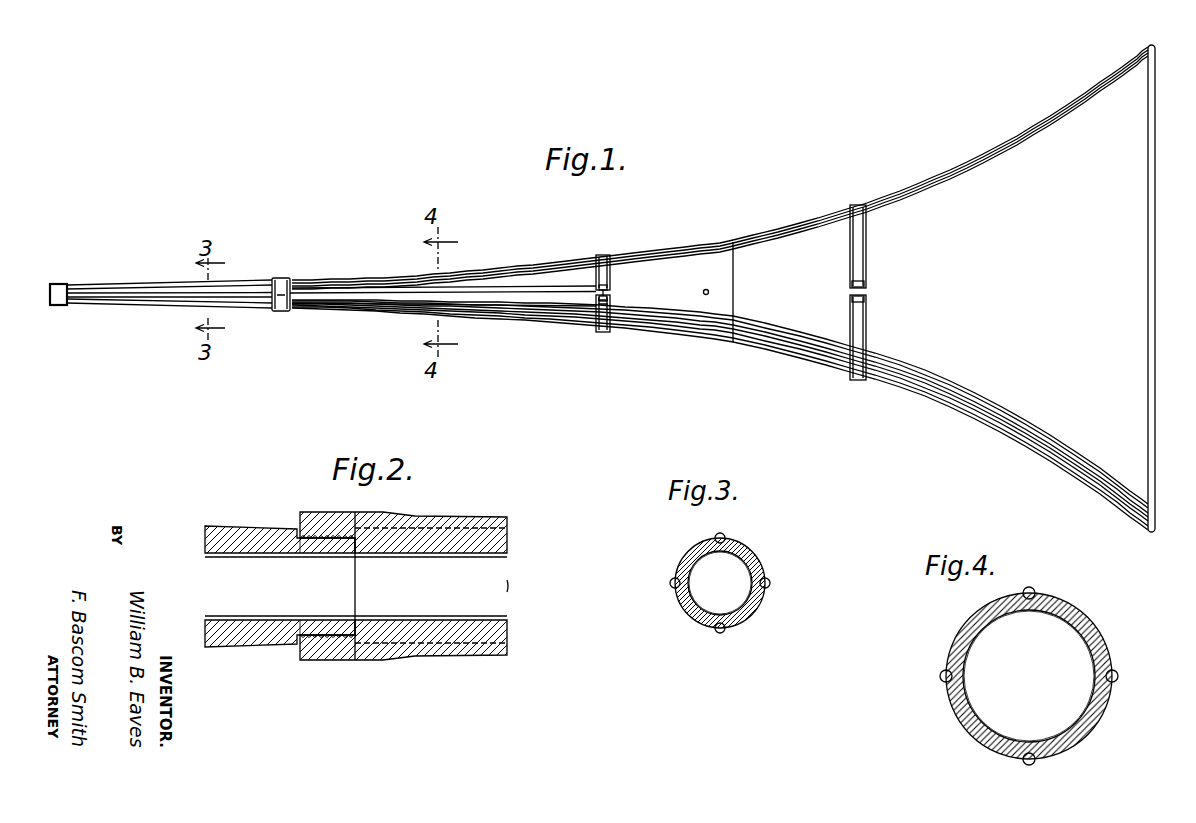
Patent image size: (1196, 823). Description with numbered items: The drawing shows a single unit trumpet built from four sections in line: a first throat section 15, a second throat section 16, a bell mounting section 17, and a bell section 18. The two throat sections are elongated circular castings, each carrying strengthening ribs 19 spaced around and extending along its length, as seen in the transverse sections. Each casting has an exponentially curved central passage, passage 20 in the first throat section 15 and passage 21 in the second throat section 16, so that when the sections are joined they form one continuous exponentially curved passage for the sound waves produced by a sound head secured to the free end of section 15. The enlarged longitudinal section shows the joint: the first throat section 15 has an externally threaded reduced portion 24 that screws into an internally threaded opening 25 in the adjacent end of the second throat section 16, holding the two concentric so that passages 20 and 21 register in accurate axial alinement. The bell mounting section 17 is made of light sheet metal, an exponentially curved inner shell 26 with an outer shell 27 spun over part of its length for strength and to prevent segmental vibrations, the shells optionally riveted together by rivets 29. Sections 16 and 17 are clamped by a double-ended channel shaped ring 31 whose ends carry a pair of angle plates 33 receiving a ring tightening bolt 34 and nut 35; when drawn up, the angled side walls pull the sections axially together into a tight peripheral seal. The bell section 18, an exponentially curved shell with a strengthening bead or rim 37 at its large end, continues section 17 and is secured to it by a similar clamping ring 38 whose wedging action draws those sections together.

In FIG. 1, the first throat section 15 is at (106, 285).
In FIG. 2, the first throat section 15 is at (200, 543).
In FIG. 3, the first throat section 15 is at (687, 616).
In FIG. 1, the second throat section 16 is at (349, 284).
In FIG. 2, the second throat section 16 is at (506, 535).
In FIG. 4, the second throat section 16 is at (962, 718).
In FIG. 1, the bell mounting section 17 is at (736, 353).
In FIG. 1, the bell section 18 is at (979, 413).
In FIG. 1, the strengthening ribs 19 is at (115, 306).
In FIG. 3, the strengthening ribs 19 is at (767, 580).
In FIG. 4, the strengthening ribs 19 is at (1114, 683).
In FIG. 2, the central passage 20 is at (210, 596).
In FIG. 3, the central passage 20 is at (745, 598).
In FIG. 2, the central passage 21 is at (503, 604).
In FIG. 4, the central passage 21 is at (1082, 645).
In FIG. 2, the externally threaded reduced portion 24 is at (326, 624).
In FIG. 2, the internally threaded opening 25 is at (325, 653).
In FIG. 1, the inner shell 26 is at (775, 248).
In FIG. 1, the outer shell 27 is at (663, 258).
In FIG. 1, the rivets 29 is at (698, 246).
In FIG. 1, the channel shaped ring 31 is at (603, 256).
In FIG. 1, the angle plates 33 is at (611, 280).
In FIG. 1, the ring tightening bolt 34 is at (594, 292).
In FIG. 1, the nut 35 is at (598, 303).
In FIG. 1, the strengthening bead or rim 37 is at (1147, 199).
In FIG. 1, the clamping ring 38 is at (858, 205).